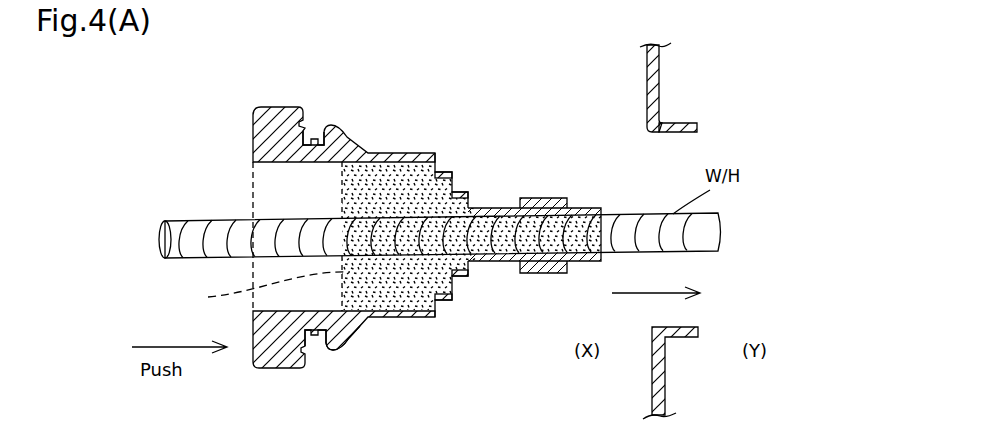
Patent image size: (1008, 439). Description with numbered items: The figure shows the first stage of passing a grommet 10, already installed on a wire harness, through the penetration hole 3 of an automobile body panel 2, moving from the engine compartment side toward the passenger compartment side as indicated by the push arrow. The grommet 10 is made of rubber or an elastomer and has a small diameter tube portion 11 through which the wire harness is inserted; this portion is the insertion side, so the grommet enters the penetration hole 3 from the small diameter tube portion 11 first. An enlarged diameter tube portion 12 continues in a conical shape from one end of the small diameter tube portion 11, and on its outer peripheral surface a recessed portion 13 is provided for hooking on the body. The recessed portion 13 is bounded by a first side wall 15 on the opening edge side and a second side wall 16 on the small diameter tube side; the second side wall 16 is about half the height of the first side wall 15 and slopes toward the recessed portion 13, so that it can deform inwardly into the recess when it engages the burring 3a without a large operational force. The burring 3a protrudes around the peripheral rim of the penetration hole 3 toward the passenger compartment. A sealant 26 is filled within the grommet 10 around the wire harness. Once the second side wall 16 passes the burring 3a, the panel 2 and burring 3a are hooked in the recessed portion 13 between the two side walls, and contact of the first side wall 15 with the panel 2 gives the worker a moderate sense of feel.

The automobile body panel 2 is at (669, 97).
The penetration hole 3 is at (669, 99).
The burring 3a is at (683, 121).
The grommet 10 is at (389, 228).
The small diameter tube portion 11 is at (498, 201).
The enlarged diameter tube portion 12 is at (380, 152).
The recessed portion 13 is at (316, 134).
The first side wall 15 is at (288, 370).
The second side wall 16 is at (333, 338).
The sealant 26 is at (264, 291).